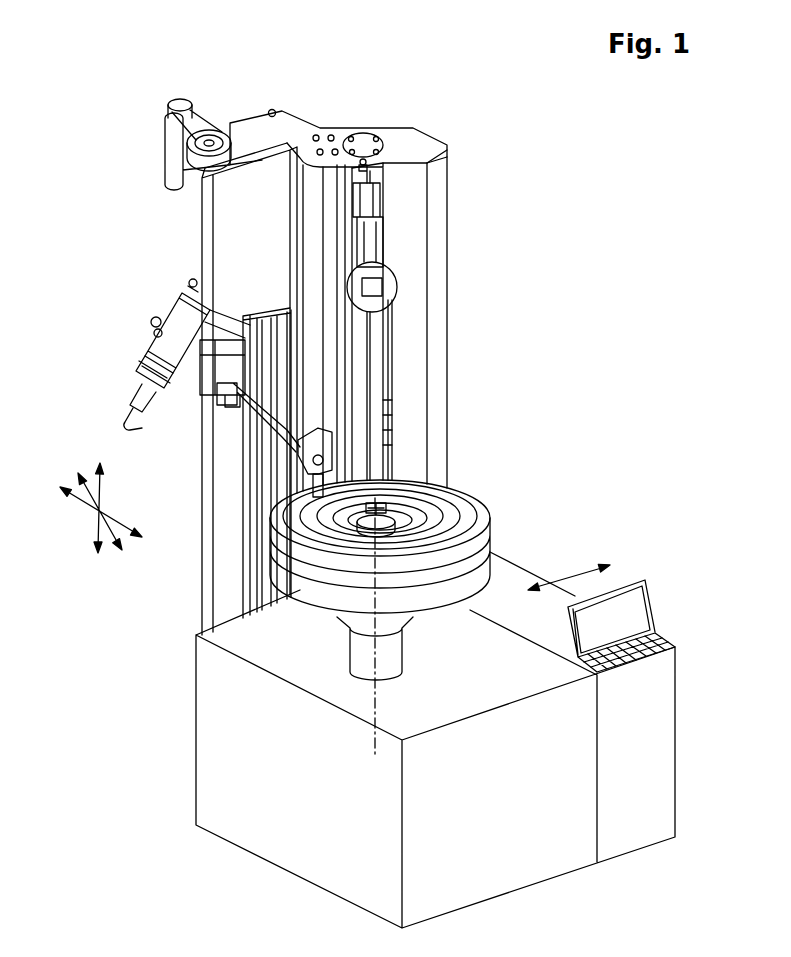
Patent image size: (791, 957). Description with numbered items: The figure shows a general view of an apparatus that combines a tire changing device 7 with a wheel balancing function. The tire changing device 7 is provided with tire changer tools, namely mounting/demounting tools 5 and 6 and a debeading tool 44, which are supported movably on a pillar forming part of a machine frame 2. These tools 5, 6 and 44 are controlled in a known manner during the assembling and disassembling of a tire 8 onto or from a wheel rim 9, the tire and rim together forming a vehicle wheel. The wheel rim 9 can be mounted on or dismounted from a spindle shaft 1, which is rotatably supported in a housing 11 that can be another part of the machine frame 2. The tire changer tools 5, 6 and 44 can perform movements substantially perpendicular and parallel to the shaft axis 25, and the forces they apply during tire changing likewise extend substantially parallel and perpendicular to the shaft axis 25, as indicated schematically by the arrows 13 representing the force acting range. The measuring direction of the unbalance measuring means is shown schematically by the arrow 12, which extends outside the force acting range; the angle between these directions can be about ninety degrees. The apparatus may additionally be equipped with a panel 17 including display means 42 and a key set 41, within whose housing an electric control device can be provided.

The spindle shaft 1 is at (352, 657).
The machine frame 2 is at (235, 233).
The mounting/demounting tool 5 is at (132, 406).
The mounting/demounting tool 6 is at (315, 491).
The tire changing device 7 is at (140, 320).
The tire 8 is at (467, 520).
The wheel rim 9 is at (425, 513).
The housing 11 is at (503, 812).
The arrow indicating measuring direction 12 is at (575, 573).
The arrows indicating force acting range 13 is at (97, 513).
The panel 17 is at (667, 627).
The shaft axis 25 is at (373, 710).
The key set 41 is at (643, 659).
The display means 42 is at (623, 607).
The debeading tool 44 is at (400, 292).